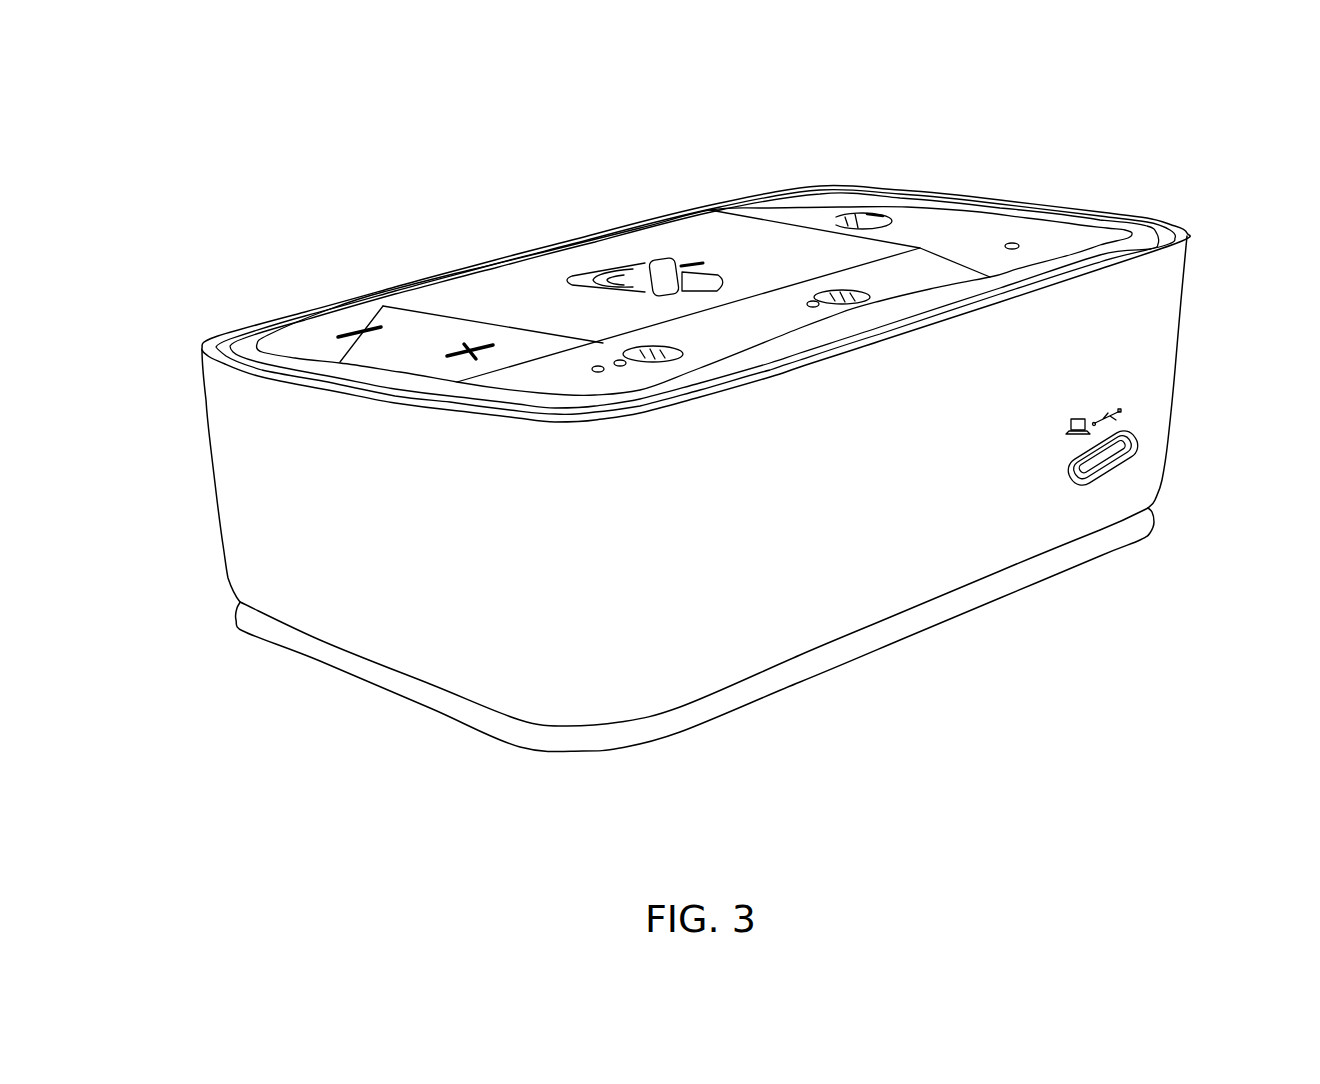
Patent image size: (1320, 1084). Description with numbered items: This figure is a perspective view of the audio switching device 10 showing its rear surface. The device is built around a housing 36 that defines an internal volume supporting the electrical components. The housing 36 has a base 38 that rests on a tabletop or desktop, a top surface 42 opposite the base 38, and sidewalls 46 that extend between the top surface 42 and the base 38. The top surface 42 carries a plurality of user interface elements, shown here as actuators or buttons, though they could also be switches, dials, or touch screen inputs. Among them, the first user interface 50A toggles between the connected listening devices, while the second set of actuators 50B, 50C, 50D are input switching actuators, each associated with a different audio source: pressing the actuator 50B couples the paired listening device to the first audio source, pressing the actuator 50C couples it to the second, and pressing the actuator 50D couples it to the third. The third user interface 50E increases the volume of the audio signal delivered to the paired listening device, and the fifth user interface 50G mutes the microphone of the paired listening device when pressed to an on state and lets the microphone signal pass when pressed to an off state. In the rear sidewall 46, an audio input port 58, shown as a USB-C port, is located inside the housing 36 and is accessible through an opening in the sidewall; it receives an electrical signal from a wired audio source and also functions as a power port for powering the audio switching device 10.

The audio switching device 10 is at (222, 108).
The housing 36 is at (353, 523).
The base 38 is at (953, 592).
The top surface 42 is at (932, 200).
The sidewalls 46 is at (1147, 348).
The first user interface 50A is at (787, 218).
The second user interface actuator 50B is at (305, 345).
The second user interface actuator 50C is at (770, 312).
The second user interface actuator 50D is at (673, 335).
The third user interface 50E is at (430, 348).
The fifth user interface 50G is at (537, 287).
The audio input port 58 is at (1107, 472).